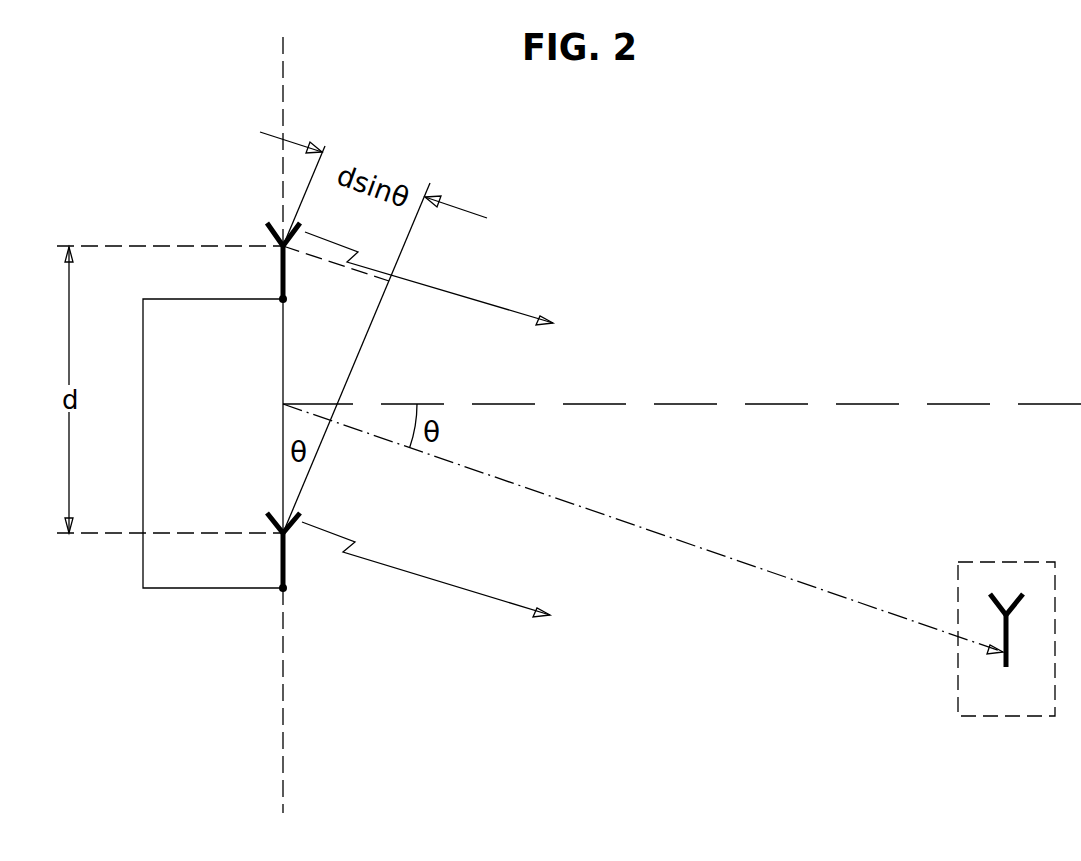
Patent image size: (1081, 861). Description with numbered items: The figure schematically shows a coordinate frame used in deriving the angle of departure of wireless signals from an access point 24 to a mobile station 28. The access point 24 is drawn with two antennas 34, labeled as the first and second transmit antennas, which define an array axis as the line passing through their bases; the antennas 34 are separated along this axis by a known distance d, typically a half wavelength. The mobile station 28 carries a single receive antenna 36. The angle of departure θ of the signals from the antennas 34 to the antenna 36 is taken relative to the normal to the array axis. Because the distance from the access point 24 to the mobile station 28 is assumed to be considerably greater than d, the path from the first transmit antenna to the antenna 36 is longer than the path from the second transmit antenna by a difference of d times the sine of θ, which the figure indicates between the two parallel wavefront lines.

The access point 24 is at (143, 355).
The mobile station 28 is at (1032, 562).
The antennas 34 is at (268, 226).
The antenna 36 is at (990, 598).